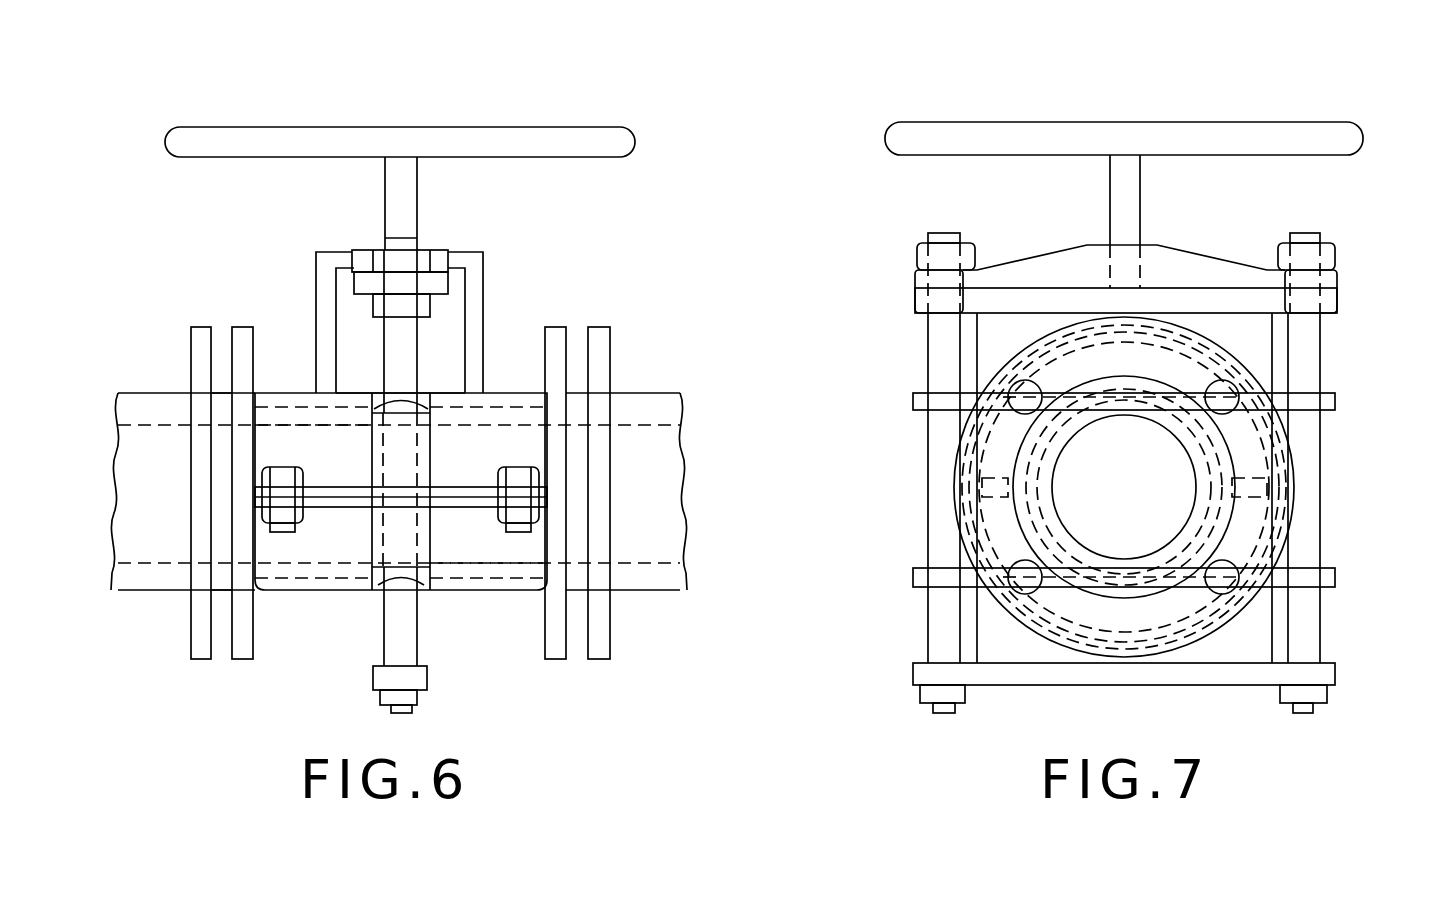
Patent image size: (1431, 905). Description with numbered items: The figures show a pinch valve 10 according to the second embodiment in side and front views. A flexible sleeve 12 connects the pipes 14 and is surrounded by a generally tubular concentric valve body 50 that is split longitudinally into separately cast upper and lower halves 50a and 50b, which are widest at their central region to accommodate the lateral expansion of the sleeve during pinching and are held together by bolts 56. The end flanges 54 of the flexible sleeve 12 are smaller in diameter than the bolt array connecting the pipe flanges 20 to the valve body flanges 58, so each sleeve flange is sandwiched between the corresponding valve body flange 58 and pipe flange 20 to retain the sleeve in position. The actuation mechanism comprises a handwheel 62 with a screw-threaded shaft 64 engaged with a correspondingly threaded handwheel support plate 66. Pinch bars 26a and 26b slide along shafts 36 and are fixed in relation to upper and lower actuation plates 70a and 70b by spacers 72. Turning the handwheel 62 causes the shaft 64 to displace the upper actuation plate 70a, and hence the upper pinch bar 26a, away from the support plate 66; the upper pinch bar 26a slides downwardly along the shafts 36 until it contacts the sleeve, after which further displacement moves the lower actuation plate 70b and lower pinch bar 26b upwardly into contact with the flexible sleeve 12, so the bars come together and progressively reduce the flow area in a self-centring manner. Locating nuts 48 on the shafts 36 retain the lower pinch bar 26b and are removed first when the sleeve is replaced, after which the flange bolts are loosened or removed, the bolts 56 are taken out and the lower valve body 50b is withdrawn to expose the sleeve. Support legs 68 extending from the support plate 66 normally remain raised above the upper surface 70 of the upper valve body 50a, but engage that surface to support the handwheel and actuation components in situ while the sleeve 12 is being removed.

In FIG. 6, the pinch valve 10 is at (576, 116).
In FIG. 7, the pinch valve 10 is at (1345, 110).
In FIG. 6, the flexible sleeve 12 is at (341, 573).
In FIG. 7, the flexible sleeve 12 is at (1193, 443).
In FIG. 6, the pipe 14 is at (650, 395).
In FIG. 6, the pipe flange 20 is at (196, 340).
In FIG. 7, the upper pinch bar 26a is at (1333, 397).
In FIG. 7, the lower pinch bar 26b is at (1323, 677).
In FIG. 6, the shaft 36 is at (410, 635).
In FIG. 7, the shaft 36 is at (1312, 607).
In FIG. 6, the locating nut 48 is at (404, 700).
In FIG. 7, the locating nut 48 is at (1318, 698).
In FIG. 6, the valve body 50 is at (271, 442).
In FIG. 6, the upper valve body half 50a is at (358, 461).
In FIG. 6, the lower valve body half 50b is at (490, 563).
In FIG. 6, the end flange 54 is at (223, 400).
In FIG. 6, the bolt 56 is at (276, 524).
In FIG. 6, the valve body flange 58 is at (245, 340).
In FIG. 6, the handwheel 62 is at (458, 132).
In FIG. 7, the handwheel 62 is at (1215, 133).
In FIG. 6, the screw-threaded shaft 64 is at (408, 208).
In FIG. 7, the screw-threaded shaft 64 is at (1132, 208).
In FIG. 6, the handwheel support plate 66 is at (440, 258).
In FIG. 7, the handwheel support plate 66 is at (1220, 268).
In FIG. 6, the support leg 68 is at (318, 265).
In FIG. 6, the upper surface 70 is at (496, 392).
In FIG. 7, the upper actuation plate 70a is at (1318, 298).
In FIG. 7, the lower actuation plate 70b is at (1333, 575).
In FIG. 7, the spacer 72 is at (1282, 352).